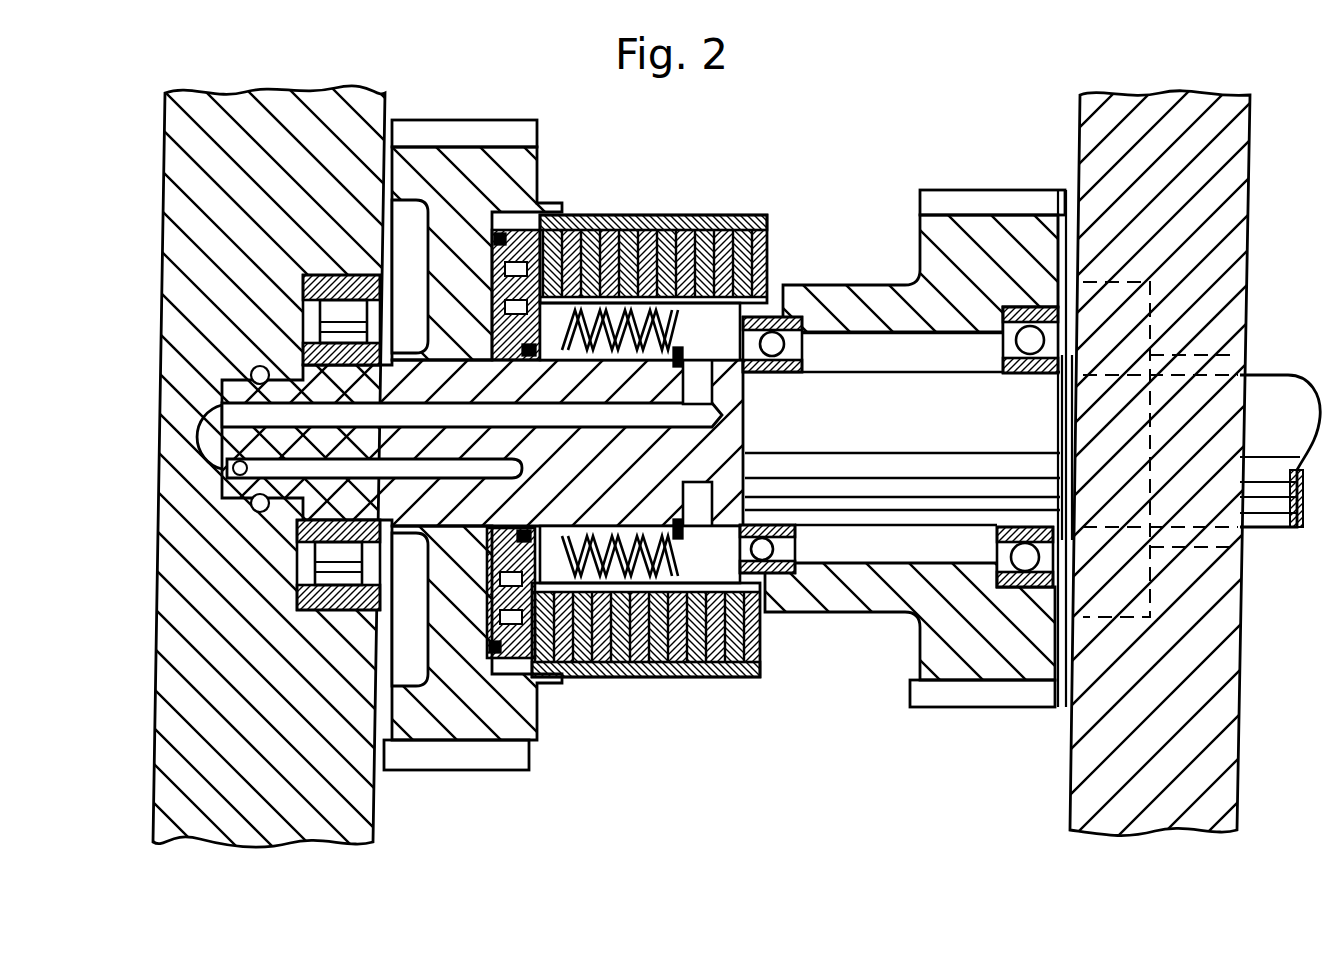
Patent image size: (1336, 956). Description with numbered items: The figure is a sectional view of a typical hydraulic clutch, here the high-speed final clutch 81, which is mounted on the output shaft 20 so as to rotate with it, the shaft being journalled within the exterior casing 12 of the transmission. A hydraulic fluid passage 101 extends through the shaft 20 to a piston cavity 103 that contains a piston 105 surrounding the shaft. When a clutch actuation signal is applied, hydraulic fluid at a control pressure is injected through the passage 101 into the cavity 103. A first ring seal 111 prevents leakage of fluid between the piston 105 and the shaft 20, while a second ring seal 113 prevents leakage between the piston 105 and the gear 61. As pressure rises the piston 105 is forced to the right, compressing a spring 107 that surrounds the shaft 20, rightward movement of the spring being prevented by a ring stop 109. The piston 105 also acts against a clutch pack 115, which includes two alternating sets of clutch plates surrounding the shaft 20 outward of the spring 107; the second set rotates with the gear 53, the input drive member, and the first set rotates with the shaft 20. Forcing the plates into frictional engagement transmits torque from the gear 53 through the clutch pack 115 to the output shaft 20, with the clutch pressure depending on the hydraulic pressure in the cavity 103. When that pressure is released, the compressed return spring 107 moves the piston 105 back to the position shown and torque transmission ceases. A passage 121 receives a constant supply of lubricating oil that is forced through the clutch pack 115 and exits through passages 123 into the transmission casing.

The exterior casing 12 is at (360, 805).
The output shaft 20 is at (1265, 400).
The gear 53 is at (1000, 205).
The gear 61 is at (467, 760).
The high-speed final clutch 81 is at (667, 468).
The hydraulic fluid passage 101 is at (535, 442).
The piston cavity 103 is at (490, 356).
The piston 105 is at (492, 282).
The spring 107 is at (775, 312).
The ring stop 109 is at (690, 360).
The first ring seal 111 is at (535, 355).
The second ring seal 113 is at (505, 228).
The clutch pack 115 is at (693, 217).
The passage 121 is at (740, 465).
The passages 123 is at (688, 192).